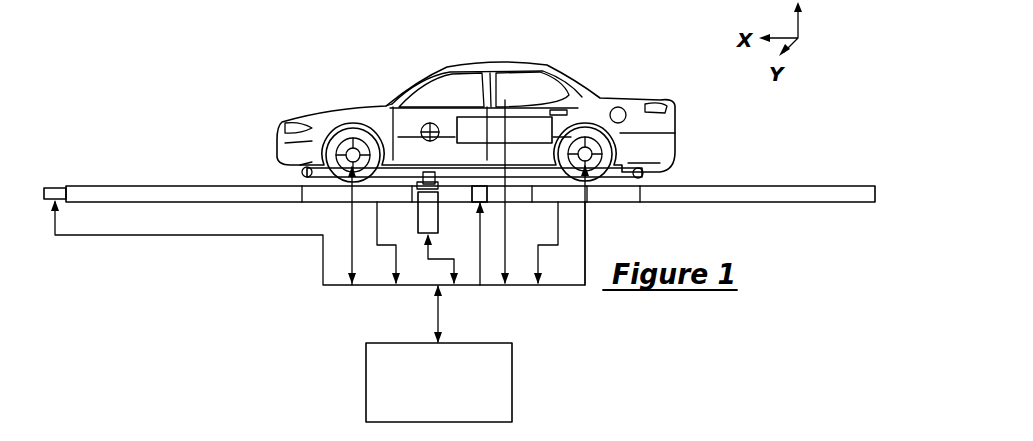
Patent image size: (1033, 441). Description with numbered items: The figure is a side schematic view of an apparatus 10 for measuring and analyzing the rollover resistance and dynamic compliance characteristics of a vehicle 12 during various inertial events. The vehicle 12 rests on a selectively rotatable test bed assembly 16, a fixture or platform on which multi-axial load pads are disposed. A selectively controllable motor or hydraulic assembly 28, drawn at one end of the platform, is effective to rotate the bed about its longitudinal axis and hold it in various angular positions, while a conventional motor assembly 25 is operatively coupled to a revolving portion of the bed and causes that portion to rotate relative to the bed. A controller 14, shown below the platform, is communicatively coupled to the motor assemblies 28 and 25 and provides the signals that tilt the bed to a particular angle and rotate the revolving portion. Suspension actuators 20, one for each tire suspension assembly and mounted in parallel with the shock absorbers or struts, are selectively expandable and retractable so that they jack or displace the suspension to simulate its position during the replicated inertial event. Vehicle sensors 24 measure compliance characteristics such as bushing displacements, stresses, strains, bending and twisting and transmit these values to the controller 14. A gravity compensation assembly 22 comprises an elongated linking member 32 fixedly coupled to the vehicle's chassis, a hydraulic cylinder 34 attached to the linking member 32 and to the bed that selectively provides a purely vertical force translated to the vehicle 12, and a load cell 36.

The apparatus 10 is at (177, 57).
The vehicle 12 is at (583, 80).
The controller 14 is at (449, 405).
The test bed assembly 16 is at (803, 176).
The suspension actuators 20 is at (357, 130).
The gravity compensation assembly 22 is at (402, 221).
The vehicle sensors 24 is at (505, 100).
The motor assembly 25 is at (483, 193).
The motor or hydraulic assembly 28 is at (58, 186).
The linking member 32 is at (644, 174).
The hydraulic cylinder 34 is at (448, 228).
The load cell 36 is at (440, 189).